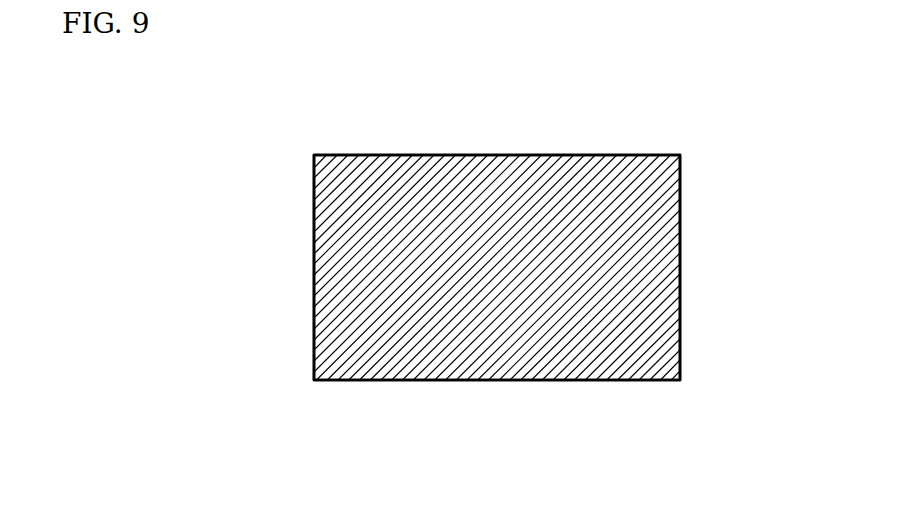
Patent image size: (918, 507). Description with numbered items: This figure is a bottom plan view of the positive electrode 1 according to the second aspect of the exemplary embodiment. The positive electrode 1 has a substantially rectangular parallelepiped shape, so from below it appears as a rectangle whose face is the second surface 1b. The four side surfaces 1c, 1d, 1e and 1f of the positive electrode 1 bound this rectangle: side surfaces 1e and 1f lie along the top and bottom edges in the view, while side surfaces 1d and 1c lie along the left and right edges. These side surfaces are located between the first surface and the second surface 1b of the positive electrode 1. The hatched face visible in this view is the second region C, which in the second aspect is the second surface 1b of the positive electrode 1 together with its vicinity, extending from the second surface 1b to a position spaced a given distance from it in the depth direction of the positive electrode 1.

The positive electrode 1 is at (664, 152).
The second surface 1b is at (588, 332).
The side surface 1c is at (680, 262).
The side surface 1d is at (314, 270).
The side surface 1e is at (543, 155).
The side surface 1f is at (512, 380).
The second region C is at (400, 353).